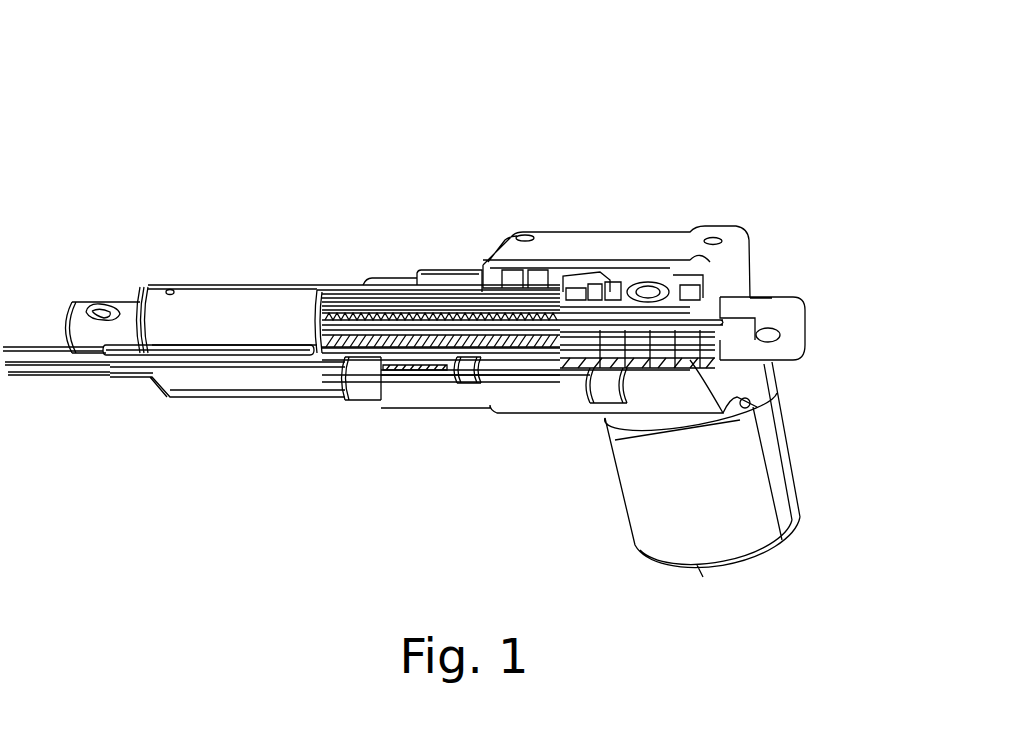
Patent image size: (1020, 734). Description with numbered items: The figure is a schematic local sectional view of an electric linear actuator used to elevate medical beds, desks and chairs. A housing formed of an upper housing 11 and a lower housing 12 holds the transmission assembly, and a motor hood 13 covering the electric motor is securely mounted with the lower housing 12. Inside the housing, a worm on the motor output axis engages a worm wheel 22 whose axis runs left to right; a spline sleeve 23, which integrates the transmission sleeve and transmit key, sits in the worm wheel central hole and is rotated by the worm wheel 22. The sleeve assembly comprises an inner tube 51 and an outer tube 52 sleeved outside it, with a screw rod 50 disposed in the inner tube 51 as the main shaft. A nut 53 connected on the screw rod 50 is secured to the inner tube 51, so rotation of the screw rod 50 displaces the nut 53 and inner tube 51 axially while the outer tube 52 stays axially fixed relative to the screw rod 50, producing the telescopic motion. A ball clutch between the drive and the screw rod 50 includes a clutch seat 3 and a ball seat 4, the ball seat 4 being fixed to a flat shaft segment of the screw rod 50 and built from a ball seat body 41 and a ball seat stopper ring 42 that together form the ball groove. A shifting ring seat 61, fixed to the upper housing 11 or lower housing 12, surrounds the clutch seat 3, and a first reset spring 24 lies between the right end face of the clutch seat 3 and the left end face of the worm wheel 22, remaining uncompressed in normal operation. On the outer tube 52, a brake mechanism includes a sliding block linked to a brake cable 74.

The clutch seat 3 is at (610, 285).
The ball seat 4 is at (612, 70).
The upper housing 11 is at (740, 233).
The lower housing 12 is at (573, 412).
The motor hood 13 is at (777, 457).
The worm wheel 22 is at (690, 283).
The spline sleeve 23 is at (733, 275).
The first reset spring 24 is at (642, 282).
The ball seat body 41 is at (583, 290).
The ball seat stopper ring 42 is at (577, 297).
The screw rod 50 is at (338, 308).
The inner tube 51 is at (402, 310).
The outer tube 52 is at (265, 302).
The nut 53 is at (482, 297).
The shifting ring seat 61 is at (550, 290).
The brake cable 74 is at (300, 365).